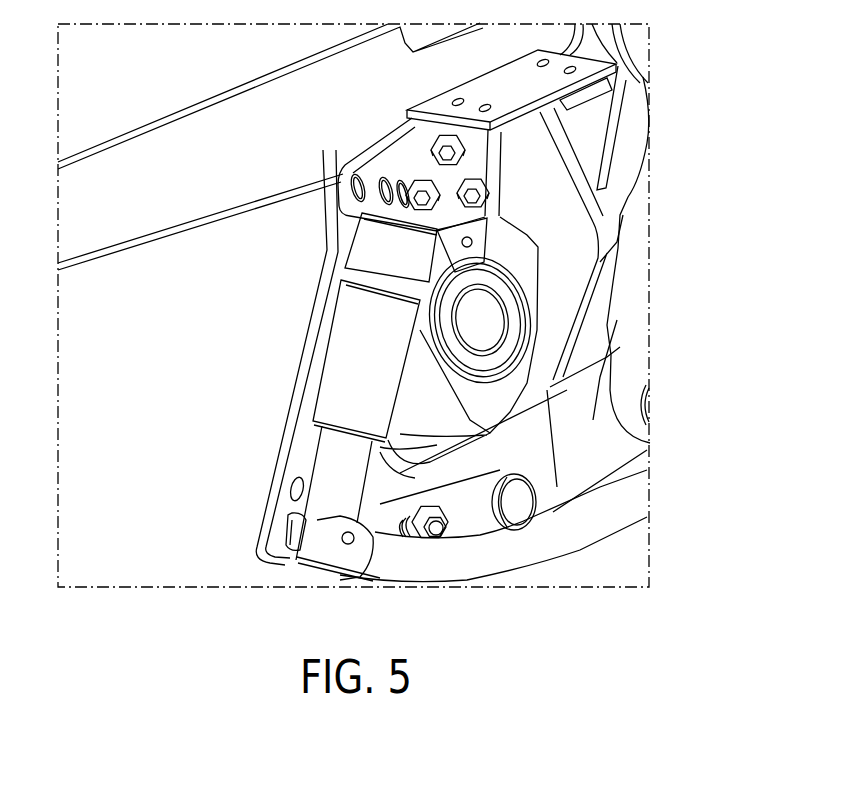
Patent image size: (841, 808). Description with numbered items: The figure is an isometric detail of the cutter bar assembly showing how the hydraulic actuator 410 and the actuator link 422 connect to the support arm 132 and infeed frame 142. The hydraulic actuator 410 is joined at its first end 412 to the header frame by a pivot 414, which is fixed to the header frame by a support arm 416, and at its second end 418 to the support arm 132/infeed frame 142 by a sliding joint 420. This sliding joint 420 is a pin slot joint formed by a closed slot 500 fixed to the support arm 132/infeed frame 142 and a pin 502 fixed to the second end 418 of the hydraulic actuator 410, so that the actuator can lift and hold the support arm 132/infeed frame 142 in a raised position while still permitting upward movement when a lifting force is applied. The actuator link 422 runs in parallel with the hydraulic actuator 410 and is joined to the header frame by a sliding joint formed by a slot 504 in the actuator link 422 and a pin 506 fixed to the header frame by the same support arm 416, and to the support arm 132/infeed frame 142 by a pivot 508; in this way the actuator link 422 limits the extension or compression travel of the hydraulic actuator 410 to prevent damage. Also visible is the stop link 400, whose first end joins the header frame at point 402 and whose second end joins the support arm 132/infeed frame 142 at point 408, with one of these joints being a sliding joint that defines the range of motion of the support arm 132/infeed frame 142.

The support arm 132 is at (165, 523).
The infeed frame 142 is at (270, 323).
The stop link 400 is at (590, 413).
The point 402 is at (650, 395).
The point 408 is at (520, 507).
The hydraulic actuator 410 is at (343, 370).
The first end 412 is at (330, 467).
The pivot 414 is at (346, 536).
The support arm 416 is at (510, 563).
The second end 418 is at (362, 240).
The sliding joint 420 is at (350, 186).
The actuator link 422 is at (310, 397).
The slot 500 is at (418, 220).
The pin 502 is at (430, 193).
The slot 504 is at (304, 516).
The pin 506 is at (303, 557).
The pivot 508 is at (345, 167).